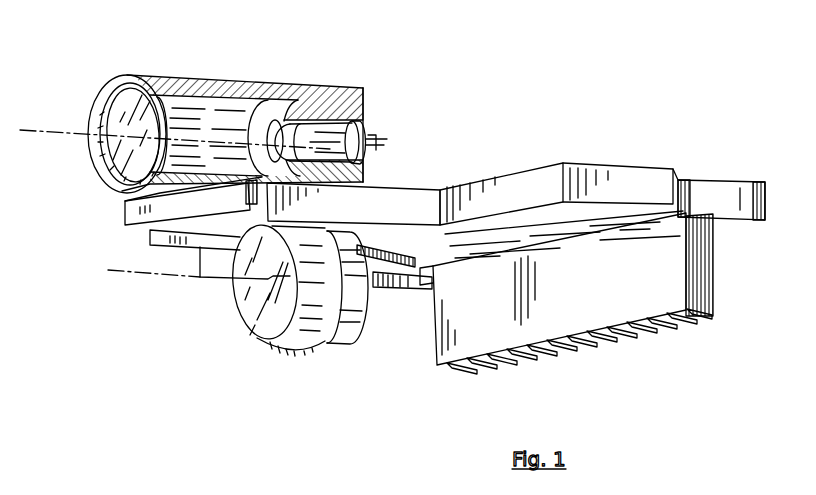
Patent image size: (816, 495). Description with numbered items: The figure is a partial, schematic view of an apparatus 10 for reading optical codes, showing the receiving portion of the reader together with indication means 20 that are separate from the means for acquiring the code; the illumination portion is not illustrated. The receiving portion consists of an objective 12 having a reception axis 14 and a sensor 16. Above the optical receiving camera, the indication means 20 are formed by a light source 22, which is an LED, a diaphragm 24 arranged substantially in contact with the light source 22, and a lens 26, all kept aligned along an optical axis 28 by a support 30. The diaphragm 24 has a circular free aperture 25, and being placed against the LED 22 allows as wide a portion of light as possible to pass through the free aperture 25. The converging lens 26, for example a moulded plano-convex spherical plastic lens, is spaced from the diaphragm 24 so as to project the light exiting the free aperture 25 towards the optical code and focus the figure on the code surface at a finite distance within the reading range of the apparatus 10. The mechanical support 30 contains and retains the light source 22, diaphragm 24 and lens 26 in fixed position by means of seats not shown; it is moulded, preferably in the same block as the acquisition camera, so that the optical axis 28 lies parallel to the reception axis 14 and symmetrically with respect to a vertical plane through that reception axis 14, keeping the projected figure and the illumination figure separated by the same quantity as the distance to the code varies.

The apparatus for reading optical codes 10 is at (75, 217).
The objective 12 is at (256, 340).
The reception axis 14 is at (132, 272).
The sensor 16 is at (484, 325).
The indication means 20 is at (194, 72).
The light source 22 is at (344, 141).
The diaphragm 24 is at (266, 124).
The free aperture 25 is at (300, 122).
The lens 26 is at (118, 153).
The optical axis 28 is at (63, 131).
The support 30 is at (369, 92).